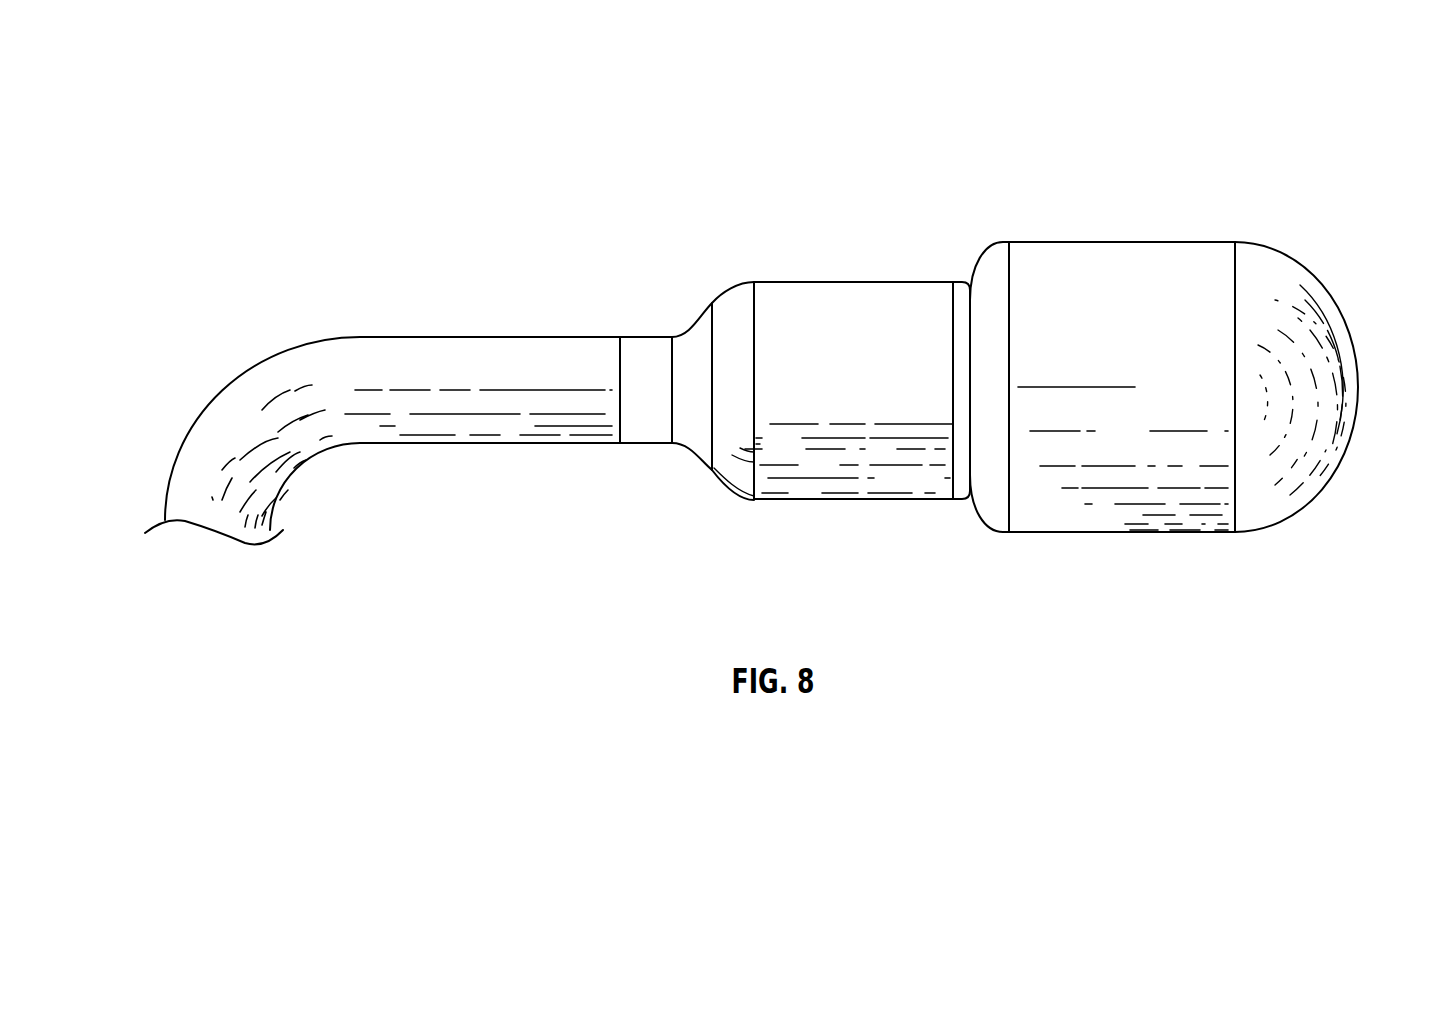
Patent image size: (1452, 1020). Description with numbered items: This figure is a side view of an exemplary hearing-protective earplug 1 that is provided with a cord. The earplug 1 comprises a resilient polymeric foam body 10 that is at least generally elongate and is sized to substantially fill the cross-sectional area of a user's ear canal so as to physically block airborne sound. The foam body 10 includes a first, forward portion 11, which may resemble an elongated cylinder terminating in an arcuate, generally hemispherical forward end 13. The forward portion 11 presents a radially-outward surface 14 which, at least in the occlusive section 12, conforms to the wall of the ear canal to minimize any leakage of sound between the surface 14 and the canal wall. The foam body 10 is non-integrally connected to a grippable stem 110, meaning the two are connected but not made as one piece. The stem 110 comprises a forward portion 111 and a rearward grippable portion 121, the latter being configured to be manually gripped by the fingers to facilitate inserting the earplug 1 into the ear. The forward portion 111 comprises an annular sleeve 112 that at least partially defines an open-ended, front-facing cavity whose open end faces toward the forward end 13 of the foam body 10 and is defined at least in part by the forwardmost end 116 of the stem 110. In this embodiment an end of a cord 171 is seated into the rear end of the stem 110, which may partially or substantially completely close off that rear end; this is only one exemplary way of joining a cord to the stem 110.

The hearing-protective earplug 1 is at (876, 80).
The resilient polymeric foam body 10 is at (1288, 143).
The first forward portion 11 is at (1180, 248).
The occlusive section 12 is at (1182, 524).
The forward end 13 is at (1387, 405).
The radially-outward surface 14 is at (1055, 242).
The grippable stem 110 is at (680, 146).
The forward portion of stem 111 is at (868, 281).
The annular sleeve 112 is at (868, 500).
The forwardmost end of stem 116 is at (968, 287).
The rearward grippable portion 121 is at (635, 238).
The cord 171 is at (462, 335).